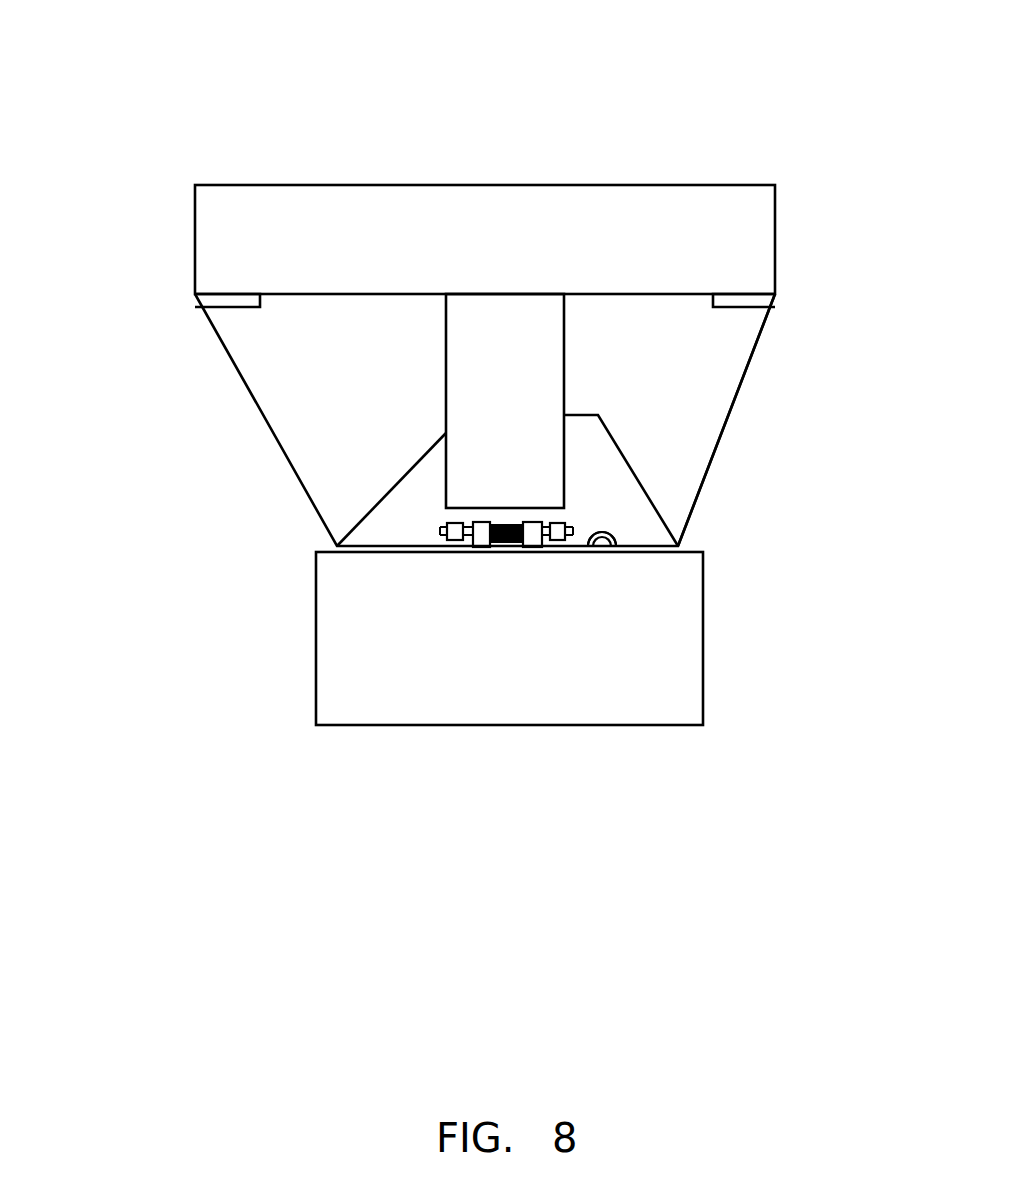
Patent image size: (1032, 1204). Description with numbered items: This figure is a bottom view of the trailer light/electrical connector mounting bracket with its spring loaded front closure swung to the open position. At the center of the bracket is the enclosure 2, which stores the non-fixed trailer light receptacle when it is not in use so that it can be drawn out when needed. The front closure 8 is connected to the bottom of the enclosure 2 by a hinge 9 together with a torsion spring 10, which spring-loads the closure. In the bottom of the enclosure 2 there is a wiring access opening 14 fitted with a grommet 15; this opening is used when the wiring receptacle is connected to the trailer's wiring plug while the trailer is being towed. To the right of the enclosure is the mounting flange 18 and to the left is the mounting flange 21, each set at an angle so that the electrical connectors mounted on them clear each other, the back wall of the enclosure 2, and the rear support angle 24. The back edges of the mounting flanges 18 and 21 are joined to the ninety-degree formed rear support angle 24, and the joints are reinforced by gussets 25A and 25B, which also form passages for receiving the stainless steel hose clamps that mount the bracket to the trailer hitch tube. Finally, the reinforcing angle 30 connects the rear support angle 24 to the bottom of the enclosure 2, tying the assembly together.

The rear support angle 24 is at (672, 183).
The gusset 25A is at (738, 311).
The gusset 25B is at (230, 310).
The reinforcing angle 30 is at (489, 367).
The mounting flange 18 is at (256, 405).
The mounting flange 21 is at (747, 378).
The enclosure 2 is at (621, 441).
The grommet 15 is at (600, 526).
The wiring access opening 14 is at (606, 555).
The hinge 9 is at (479, 550).
The torsion spring 10 is at (507, 546).
The front closure 8 is at (704, 648).